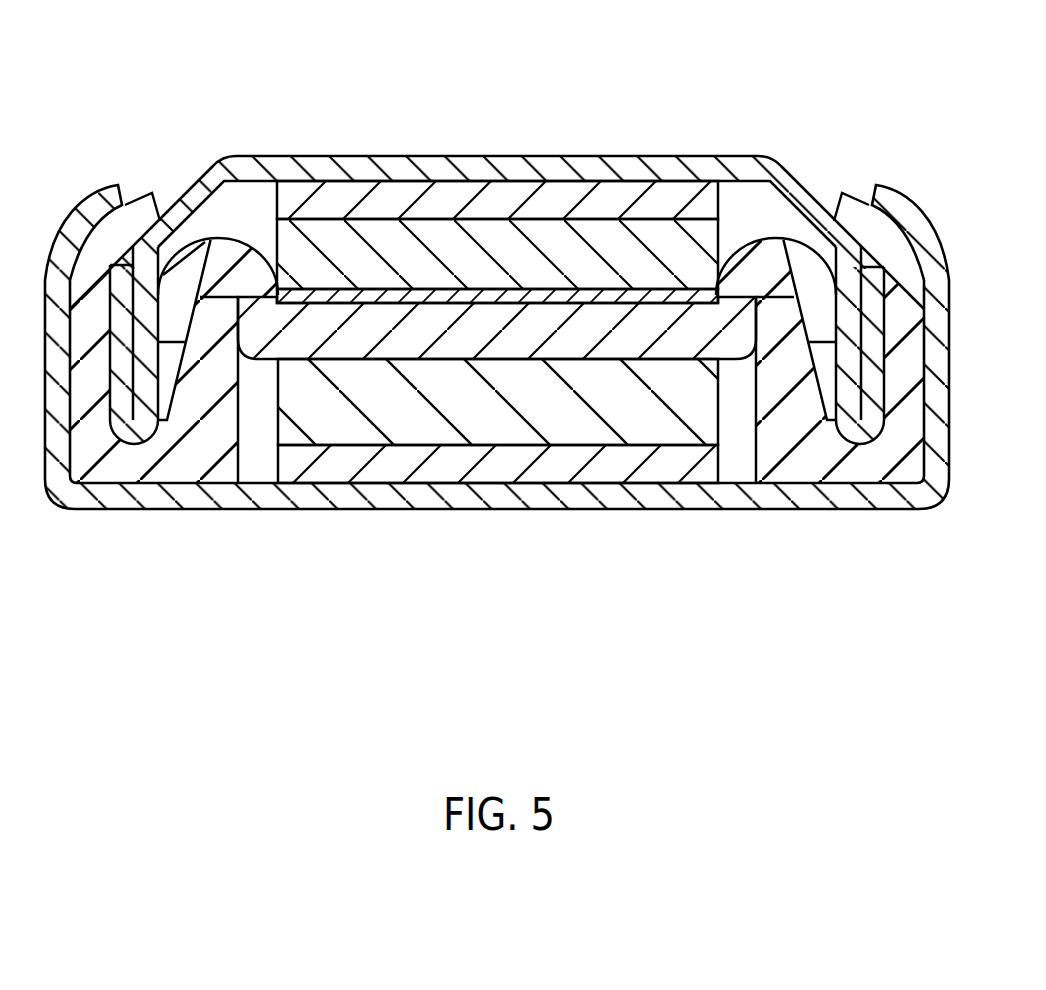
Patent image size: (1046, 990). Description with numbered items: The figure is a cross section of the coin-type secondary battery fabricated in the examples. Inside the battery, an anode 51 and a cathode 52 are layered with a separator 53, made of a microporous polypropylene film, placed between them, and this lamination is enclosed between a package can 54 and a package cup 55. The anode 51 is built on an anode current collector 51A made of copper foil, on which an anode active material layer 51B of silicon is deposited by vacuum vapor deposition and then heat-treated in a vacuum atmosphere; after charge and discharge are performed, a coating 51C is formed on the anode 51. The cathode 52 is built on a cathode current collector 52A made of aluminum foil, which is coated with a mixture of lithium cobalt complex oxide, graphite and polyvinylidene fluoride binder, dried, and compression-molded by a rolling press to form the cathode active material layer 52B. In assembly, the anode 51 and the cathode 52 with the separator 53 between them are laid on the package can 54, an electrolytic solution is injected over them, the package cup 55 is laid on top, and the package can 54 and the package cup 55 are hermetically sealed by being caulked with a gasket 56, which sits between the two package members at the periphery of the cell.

The anode 51 is at (506, 159).
The anode current collector 51A is at (404, 190).
The anode active material layer 51B is at (550, 258).
The coating 51C is at (367, 85).
The cathode 52 is at (498, 513).
The cathode current collector 52A is at (697, 597).
The cathode active material layer 52B is at (648, 430).
The separator 53 is at (790, 260).
The package can 54 is at (343, 495).
The package cup 55 is at (272, 168).
The gasket 56 is at (188, 468).